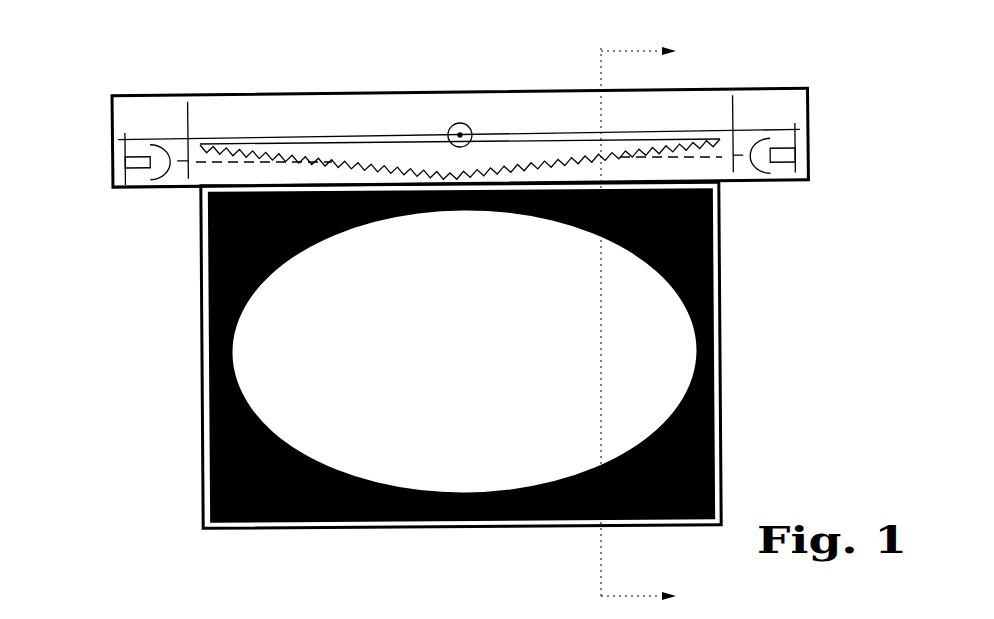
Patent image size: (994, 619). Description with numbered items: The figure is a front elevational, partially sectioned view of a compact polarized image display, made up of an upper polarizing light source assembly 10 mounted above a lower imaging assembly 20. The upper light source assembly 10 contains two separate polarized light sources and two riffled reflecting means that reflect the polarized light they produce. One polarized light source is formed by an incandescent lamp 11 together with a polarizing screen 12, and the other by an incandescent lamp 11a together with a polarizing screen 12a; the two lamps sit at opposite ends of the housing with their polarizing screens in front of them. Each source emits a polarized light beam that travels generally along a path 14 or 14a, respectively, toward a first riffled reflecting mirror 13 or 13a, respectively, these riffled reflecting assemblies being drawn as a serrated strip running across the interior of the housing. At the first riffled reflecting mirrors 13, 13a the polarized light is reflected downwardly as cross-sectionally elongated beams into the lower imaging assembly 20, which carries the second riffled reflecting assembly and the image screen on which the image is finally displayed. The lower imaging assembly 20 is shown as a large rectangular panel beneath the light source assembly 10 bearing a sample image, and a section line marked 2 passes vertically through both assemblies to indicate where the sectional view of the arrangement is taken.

The upper polarizing light source assembly 10 is at (823, 135).
The incandescent lamp 11 is at (158, 142).
The incandescent lamp 11a is at (777, 168).
The polarizing screen 12 is at (193, 117).
The polarizing screen 12a is at (730, 118).
The first riffled reflecting mirror 13 is at (317, 165).
The first riffled reflecting mirror 13a is at (570, 165).
The path 14 is at (208, 165).
The path 14a is at (727, 182).
The lower imaging assembly 20 is at (732, 392).
The section line 2- 2 is at (656, 325).